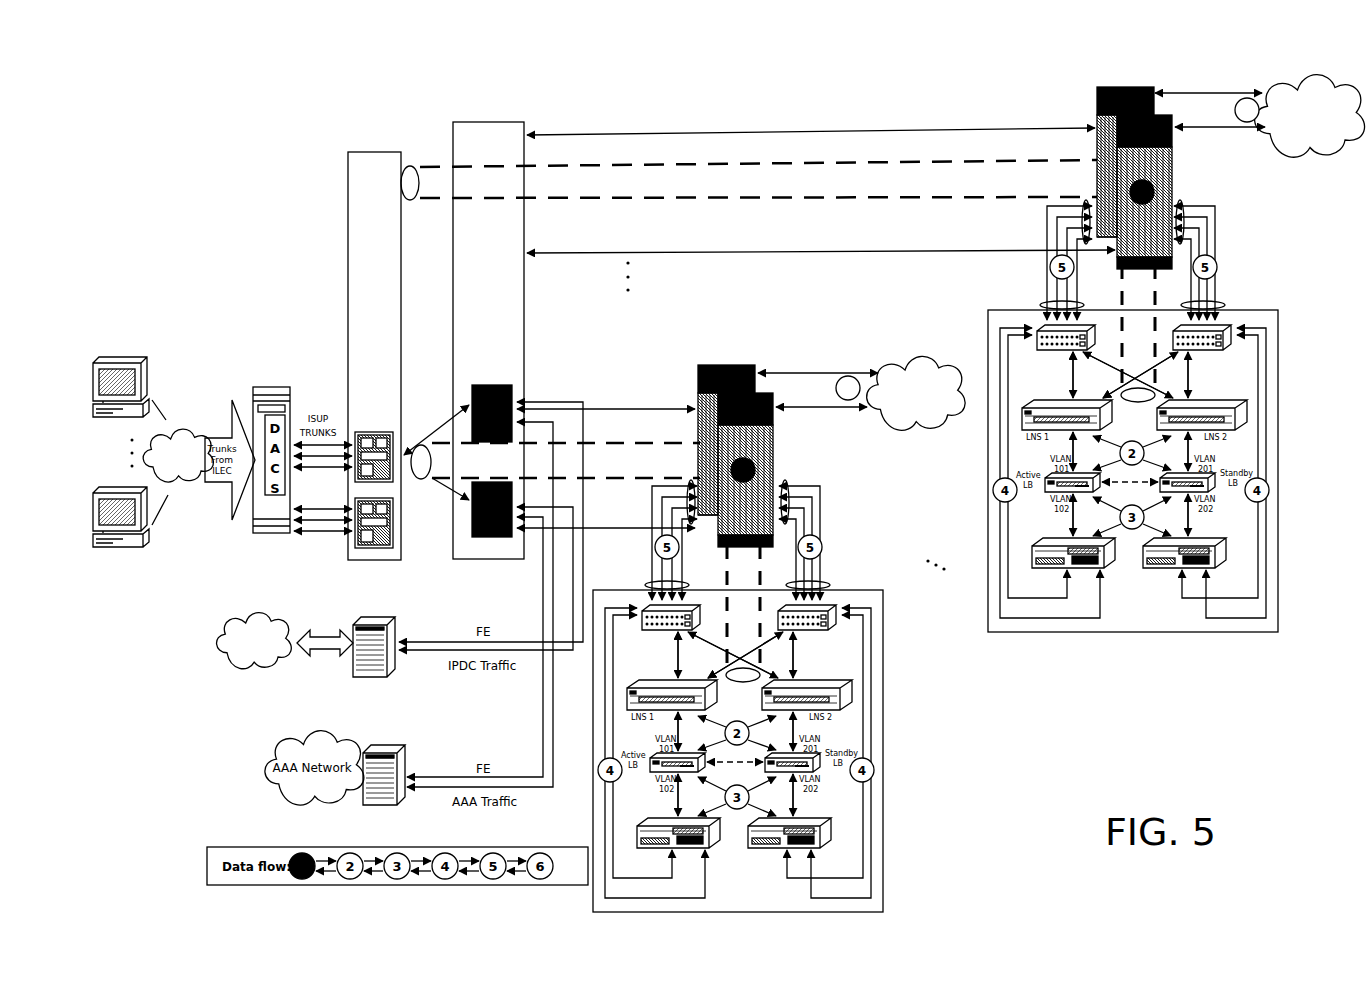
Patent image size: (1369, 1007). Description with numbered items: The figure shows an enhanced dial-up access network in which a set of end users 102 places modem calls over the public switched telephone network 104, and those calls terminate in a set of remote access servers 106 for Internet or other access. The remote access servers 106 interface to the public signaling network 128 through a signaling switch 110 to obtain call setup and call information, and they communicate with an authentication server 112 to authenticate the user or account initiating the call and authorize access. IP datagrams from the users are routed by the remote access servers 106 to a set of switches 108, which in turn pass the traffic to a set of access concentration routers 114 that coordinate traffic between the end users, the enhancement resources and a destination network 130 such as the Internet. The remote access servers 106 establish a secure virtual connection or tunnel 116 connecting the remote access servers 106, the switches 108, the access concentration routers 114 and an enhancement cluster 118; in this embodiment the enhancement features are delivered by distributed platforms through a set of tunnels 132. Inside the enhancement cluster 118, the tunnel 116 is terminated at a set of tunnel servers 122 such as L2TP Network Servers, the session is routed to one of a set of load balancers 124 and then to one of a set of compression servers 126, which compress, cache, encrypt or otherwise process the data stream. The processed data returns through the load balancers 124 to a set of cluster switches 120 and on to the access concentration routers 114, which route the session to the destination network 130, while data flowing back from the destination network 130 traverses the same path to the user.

The end users 102 is at (137, 353).
The public switched telephone network 104 is at (177, 410).
The remote access servers 106 is at (365, 150).
The switches 108 is at (508, 122).
The signaling switch 110 is at (377, 613).
The authentication server 112 is at (387, 743).
The access concentration routers 114 is at (728, 365).
The tunnel 116 is at (855, 135).
The enhancement cluster 118 is at (818, 912).
The cluster switches 120 is at (838, 622).
The tunnel servers 122 is at (852, 706).
The load balancers 124 is at (858, 797).
The compression servers 126 is at (845, 858).
The Signaling System 7 network 128 is at (272, 600).
The destination network 130 is at (878, 352).
The tunnels 132 is at (610, 457).